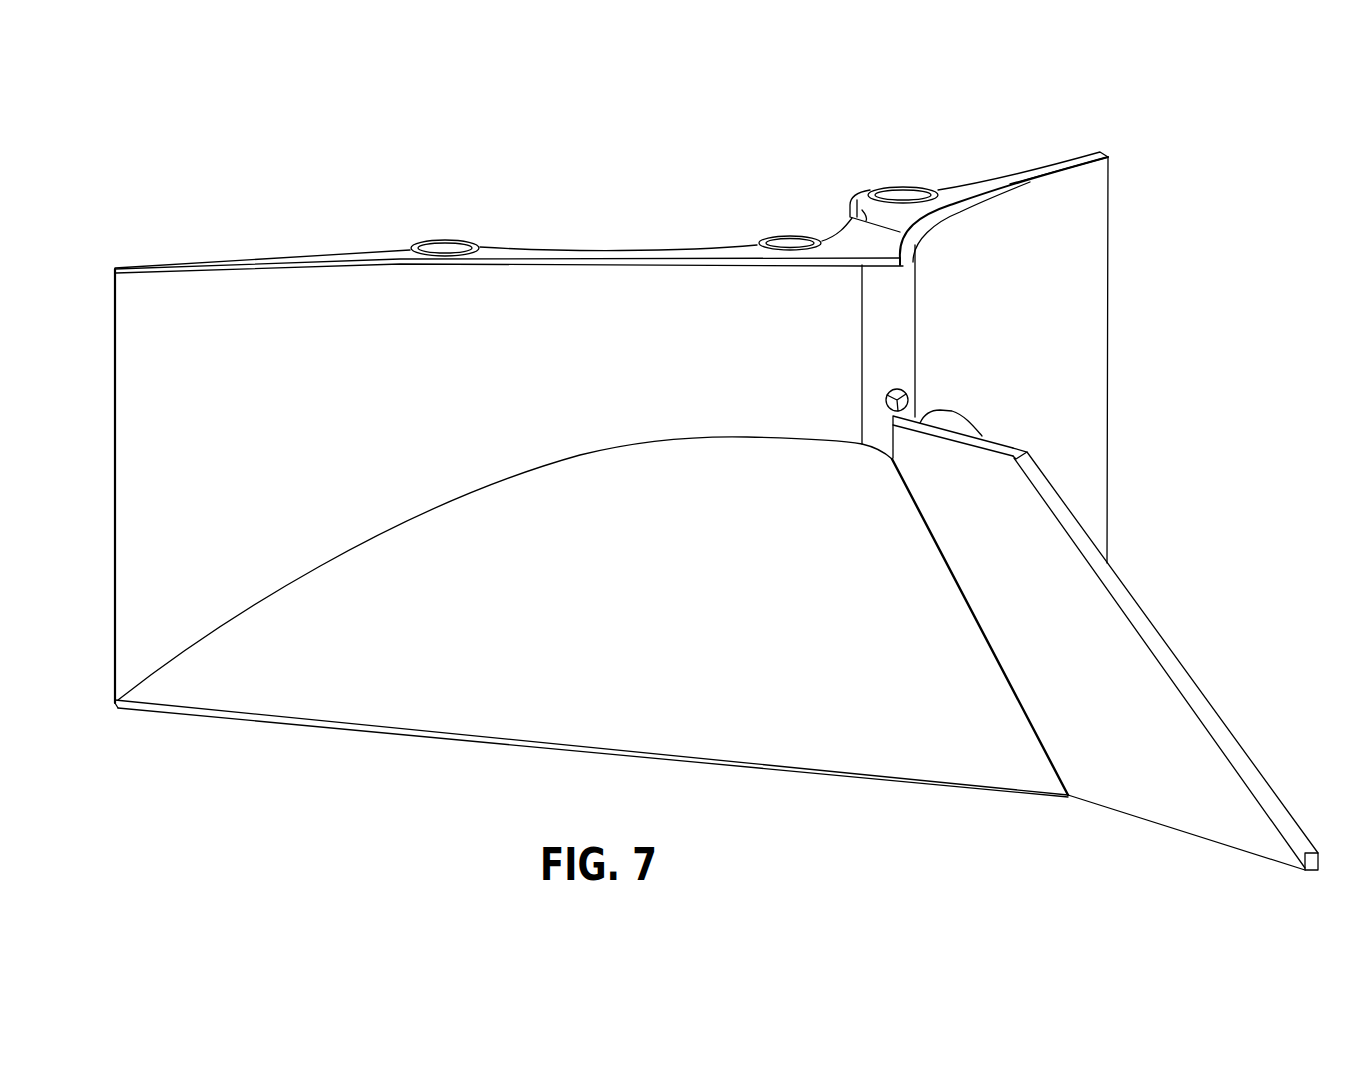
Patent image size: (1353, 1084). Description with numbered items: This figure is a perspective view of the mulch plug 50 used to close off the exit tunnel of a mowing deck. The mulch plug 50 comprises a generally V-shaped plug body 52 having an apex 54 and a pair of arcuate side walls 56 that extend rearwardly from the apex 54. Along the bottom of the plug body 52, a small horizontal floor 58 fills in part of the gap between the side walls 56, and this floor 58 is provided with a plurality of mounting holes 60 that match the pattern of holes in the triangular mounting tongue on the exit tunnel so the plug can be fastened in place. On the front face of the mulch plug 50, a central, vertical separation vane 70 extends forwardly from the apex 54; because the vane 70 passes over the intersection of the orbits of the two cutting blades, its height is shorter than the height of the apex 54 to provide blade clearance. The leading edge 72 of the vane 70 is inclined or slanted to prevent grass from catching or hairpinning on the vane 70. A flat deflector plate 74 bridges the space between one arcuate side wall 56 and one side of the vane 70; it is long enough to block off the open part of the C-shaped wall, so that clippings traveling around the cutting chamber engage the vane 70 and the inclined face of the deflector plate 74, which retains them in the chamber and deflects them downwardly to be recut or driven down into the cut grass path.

The mulch plug 50 is at (1048, 153).
The plug body 52 is at (962, 348).
The apex 54 is at (893, 286).
The arcuate side wall 56 is at (253, 350).
The floor 58 is at (953, 183).
The mounting hole 60 is at (446, 240).
The separation vane 70 is at (1118, 643).
The leading edge 72 is at (1117, 577).
The deflector plate 74 is at (665, 660).